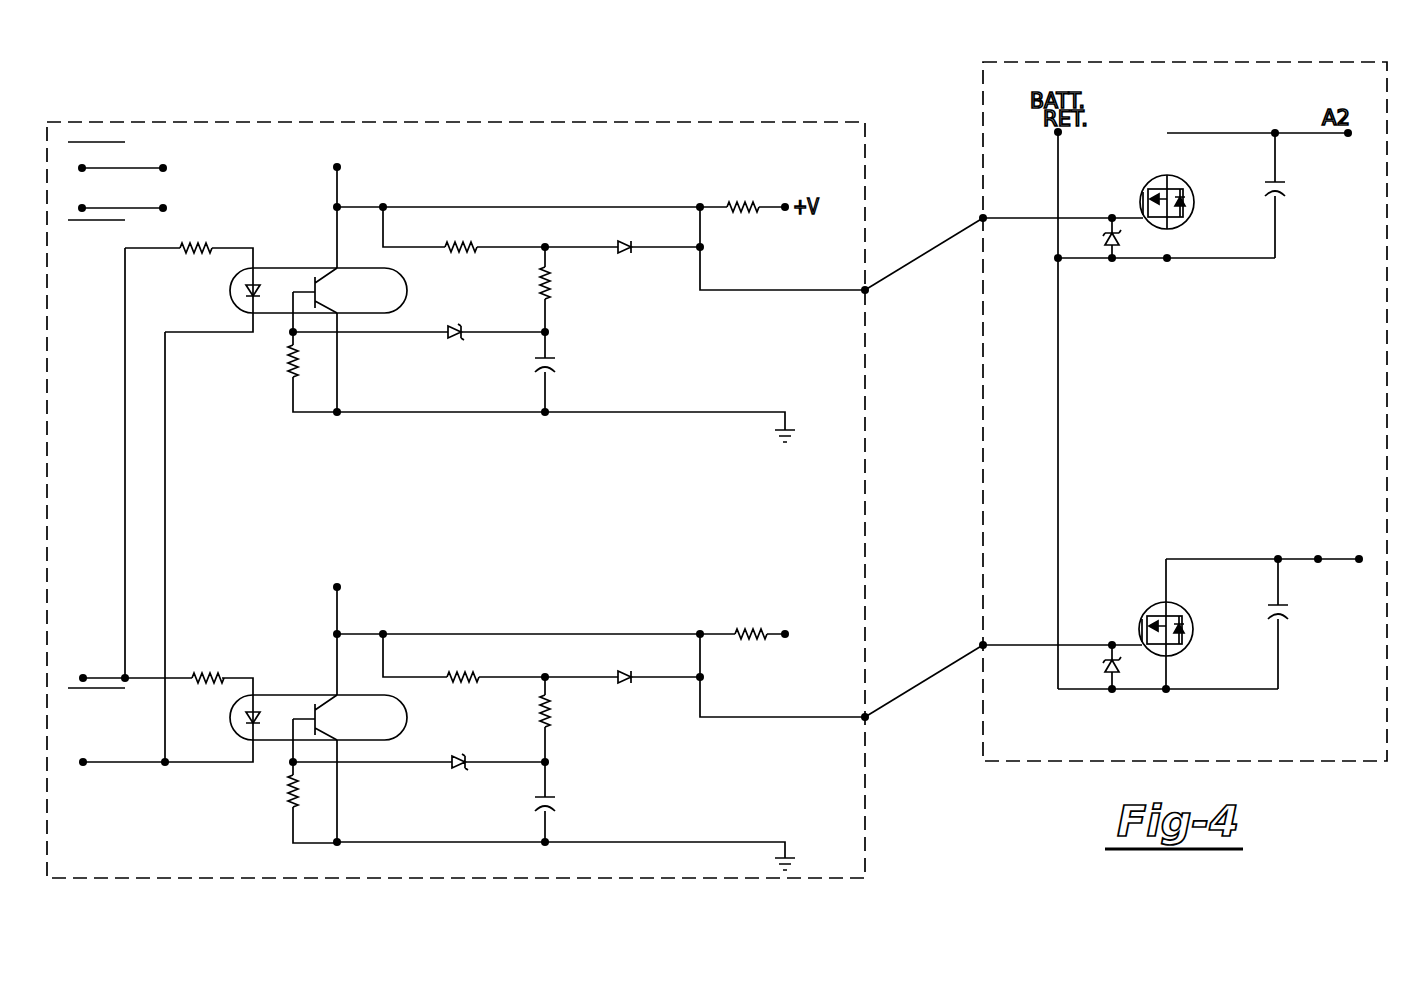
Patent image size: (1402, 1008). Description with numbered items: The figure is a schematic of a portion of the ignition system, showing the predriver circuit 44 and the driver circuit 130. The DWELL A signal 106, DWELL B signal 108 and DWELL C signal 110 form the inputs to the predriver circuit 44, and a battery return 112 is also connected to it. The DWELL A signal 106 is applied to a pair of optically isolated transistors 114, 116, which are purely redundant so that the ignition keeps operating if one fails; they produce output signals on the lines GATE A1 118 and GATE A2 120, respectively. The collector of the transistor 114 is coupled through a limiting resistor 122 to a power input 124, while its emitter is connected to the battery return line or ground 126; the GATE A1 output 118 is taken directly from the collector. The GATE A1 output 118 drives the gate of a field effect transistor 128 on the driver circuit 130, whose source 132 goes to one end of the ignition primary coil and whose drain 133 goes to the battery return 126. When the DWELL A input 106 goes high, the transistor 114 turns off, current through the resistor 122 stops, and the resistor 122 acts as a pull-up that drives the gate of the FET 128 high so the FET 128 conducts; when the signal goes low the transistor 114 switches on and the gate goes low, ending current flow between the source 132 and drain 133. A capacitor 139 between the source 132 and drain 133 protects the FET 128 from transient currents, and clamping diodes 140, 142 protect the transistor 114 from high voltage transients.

The predriver circuit 44 is at (598, 122).
The DWELL A signal 106 is at (98, 676).
The DWELL B signal 108 is at (165, 207).
The DWELL C signal 110 is at (165, 165).
The battery return 112 is at (107, 760).
The optically isolated transistor 114 is at (288, 694).
The optically isolated transistor 116 is at (287, 267).
The GATE A1 output line 118 is at (772, 718).
The GATE A2 output line 120 is at (760, 292).
The limiting resistor 122 is at (757, 632).
The power input 124 is at (786, 640).
The battery return line 126 is at (675, 842).
The field effect transistor 128 is at (1139, 624).
The driver circuit 130 is at (1180, 62).
The source 132 is at (1193, 559).
The drain 133 is at (1170, 668).
The capacitor 139 is at (1284, 603).
The clamping diode 140 is at (452, 770).
The clamping diode 142 is at (625, 685).